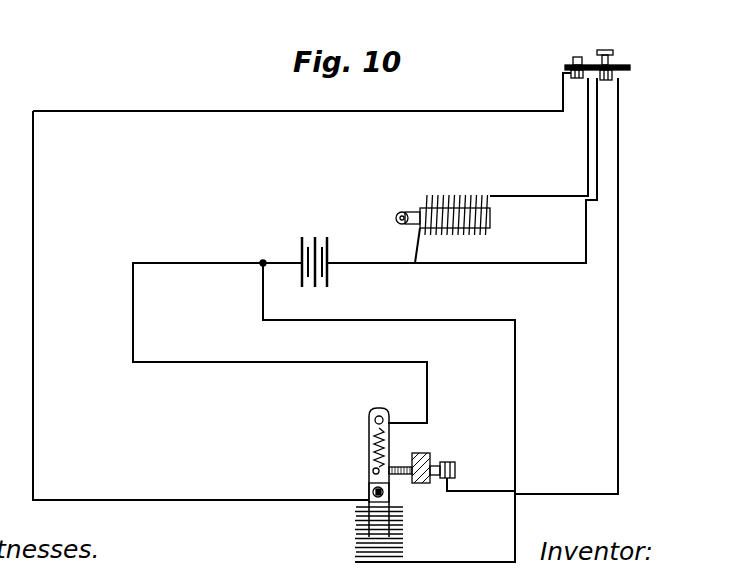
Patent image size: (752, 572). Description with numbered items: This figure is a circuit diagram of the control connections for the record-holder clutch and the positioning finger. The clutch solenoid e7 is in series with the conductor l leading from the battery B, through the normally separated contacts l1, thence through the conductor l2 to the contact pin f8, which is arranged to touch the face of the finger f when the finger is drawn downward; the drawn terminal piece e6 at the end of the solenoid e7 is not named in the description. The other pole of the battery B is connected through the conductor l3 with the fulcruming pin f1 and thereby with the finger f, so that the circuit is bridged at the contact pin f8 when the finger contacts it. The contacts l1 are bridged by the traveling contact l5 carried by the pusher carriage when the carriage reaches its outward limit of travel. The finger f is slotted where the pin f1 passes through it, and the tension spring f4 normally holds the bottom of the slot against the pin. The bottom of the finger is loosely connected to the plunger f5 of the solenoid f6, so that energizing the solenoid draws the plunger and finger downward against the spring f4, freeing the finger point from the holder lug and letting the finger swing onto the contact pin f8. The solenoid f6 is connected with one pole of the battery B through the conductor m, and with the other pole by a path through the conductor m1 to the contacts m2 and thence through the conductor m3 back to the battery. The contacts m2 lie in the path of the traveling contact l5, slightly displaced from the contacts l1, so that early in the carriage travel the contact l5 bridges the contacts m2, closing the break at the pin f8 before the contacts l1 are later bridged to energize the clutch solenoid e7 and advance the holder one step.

The traveling contact l5 is at (598, 52).
The contacts l1 is at (616, 62).
The contacts m2 is at (563, 73).
The conductor m1 is at (34, 250).
The solenoid e7 is at (456, 200).
The coil eyelet e6 is at (404, 211).
The battery B is at (300, 250).
The conductor l is at (357, 262).
The conductor m3 is at (518, 264).
The conductor l2 is at (620, 273).
The conductor l3 is at (243, 366).
The conductor m is at (518, 358).
The finger f is at (393, 418).
The tension spring f4 is at (373, 440).
The fulcruming pin f1 is at (388, 433).
The contact pin f8 is at (422, 456).
The plunger f5 is at (390, 501).
The solenoid f6 is at (403, 538).